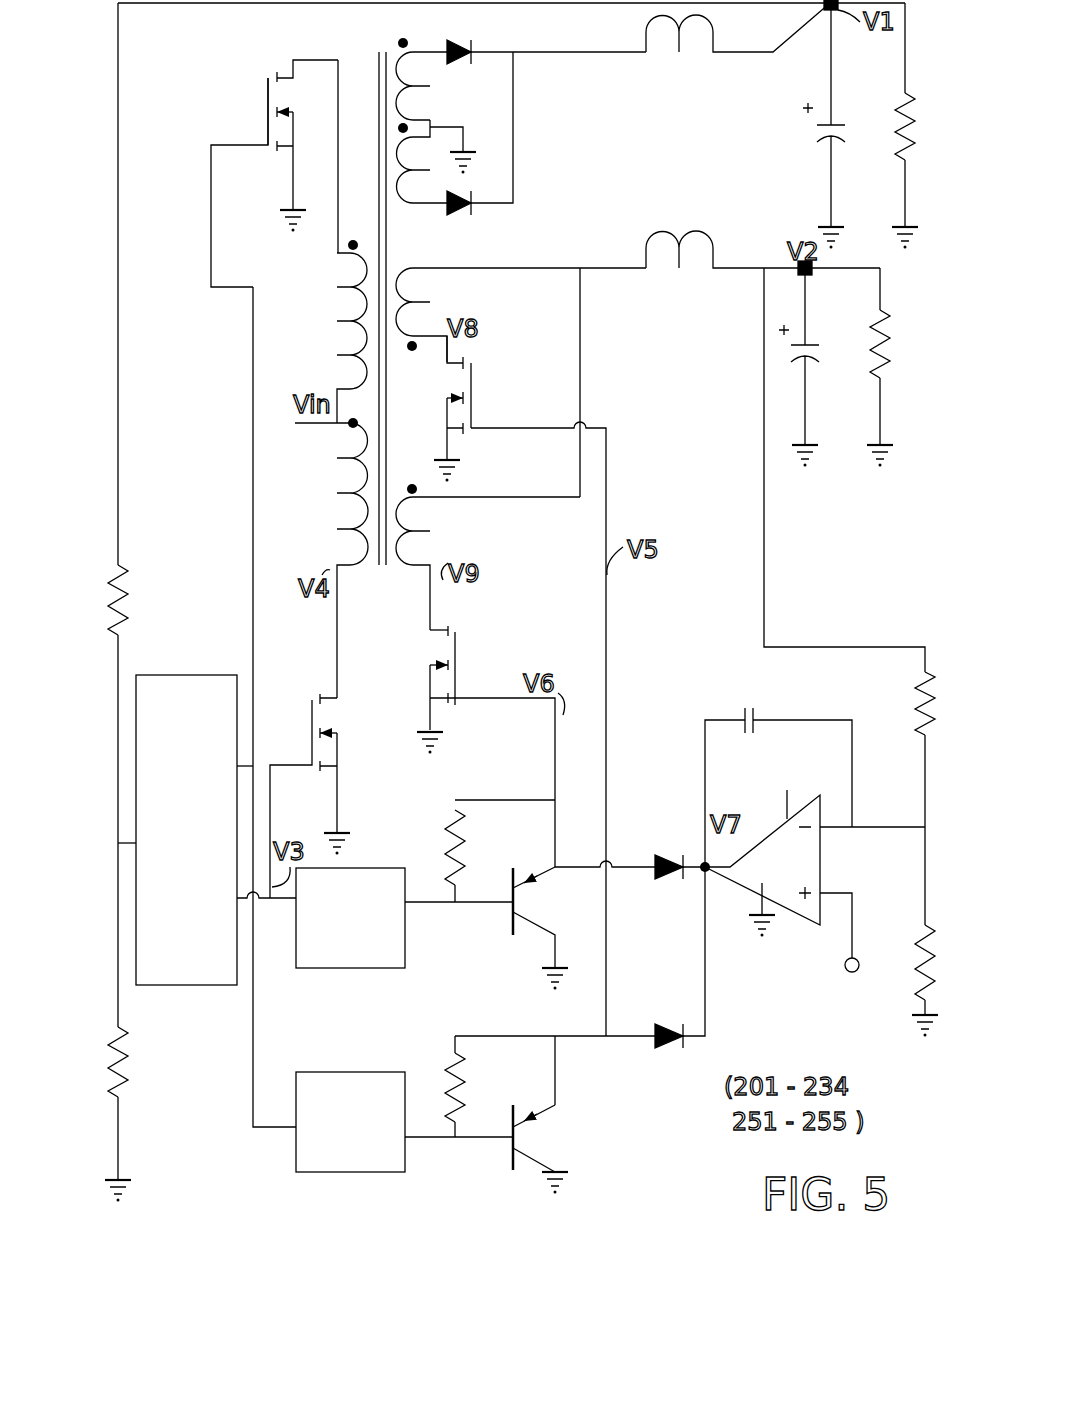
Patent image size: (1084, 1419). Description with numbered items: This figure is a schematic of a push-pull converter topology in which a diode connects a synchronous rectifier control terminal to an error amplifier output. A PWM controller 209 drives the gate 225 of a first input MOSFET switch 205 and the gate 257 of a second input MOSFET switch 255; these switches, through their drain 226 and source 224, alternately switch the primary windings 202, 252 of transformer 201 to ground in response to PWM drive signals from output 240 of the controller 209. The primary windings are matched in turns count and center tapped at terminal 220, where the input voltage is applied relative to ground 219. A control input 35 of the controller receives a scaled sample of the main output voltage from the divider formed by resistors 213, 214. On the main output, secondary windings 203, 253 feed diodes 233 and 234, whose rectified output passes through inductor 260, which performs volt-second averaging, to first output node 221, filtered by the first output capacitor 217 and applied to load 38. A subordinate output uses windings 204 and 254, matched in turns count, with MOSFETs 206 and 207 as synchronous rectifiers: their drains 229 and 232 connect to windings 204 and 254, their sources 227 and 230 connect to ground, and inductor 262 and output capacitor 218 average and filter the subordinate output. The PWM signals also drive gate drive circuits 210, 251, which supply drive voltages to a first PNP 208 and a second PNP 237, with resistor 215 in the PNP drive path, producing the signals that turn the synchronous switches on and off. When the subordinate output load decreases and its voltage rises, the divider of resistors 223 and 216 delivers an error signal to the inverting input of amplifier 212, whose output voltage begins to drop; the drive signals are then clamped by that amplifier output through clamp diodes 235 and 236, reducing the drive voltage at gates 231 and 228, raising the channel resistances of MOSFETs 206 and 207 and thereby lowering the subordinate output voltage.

The control input 35 is at (113, 843).
The load 38 is at (897, 138).
The transformer 201 is at (384, 48).
The primary winding 202 is at (362, 277).
The secondary winding 203 is at (470, 88).
The secondary winding 204 is at (432, 295).
The first input MOSFET switch 205 is at (260, 149).
The synchronous switch MOSFET 206 is at (520, 685).
The synchronous switch MOSFET 207 is at (480, 736).
The first PNP 208 is at (502, 920).
The PWM controller 209 is at (164, 870).
The gate drive circuit 210 is at (328, 957).
The amplifier 212 is at (806, 867).
The first output voltage sampling resistor 213 is at (107, 608).
The second output voltage sampling resistor 214 is at (147, 1065).
The resistor 215 is at (467, 838).
The resistor 216 is at (920, 970).
The first output capacitor 217 is at (800, 142).
The output capacitor 218 is at (813, 362).
The ground 219 is at (120, 1177).
The center tap terminal 220 is at (322, 425).
The first output node 221 is at (828, 3).
The resistor 223 is at (923, 680).
The source 224 is at (288, 152).
The gate 225 is at (265, 143).
The drain 226 is at (292, 62).
The source 227 is at (455, 440).
The gate 228 is at (483, 423).
The drain 229 is at (458, 363).
The source 230 is at (430, 703).
The gate 231 is at (458, 705).
The drain 232 is at (447, 627).
The diode 233 is at (457, 43).
The diode 234 is at (447, 213).
The clamp diode 235 is at (675, 1028).
The clamp diode 236 is at (673, 855).
The second PNP 237 is at (500, 1148).
The output 240 is at (237, 900).
The gate drive circuit 251 is at (328, 1158).
The primary winding 252 is at (353, 530).
The secondary winding 253 is at (470, 143).
The subordinate winding 254 is at (477, 528).
The second input MOSFET switch 255 is at (362, 796).
The gate 257 is at (312, 762).
The inductor 260 is at (650, 35).
The inductor 262 is at (713, 255).